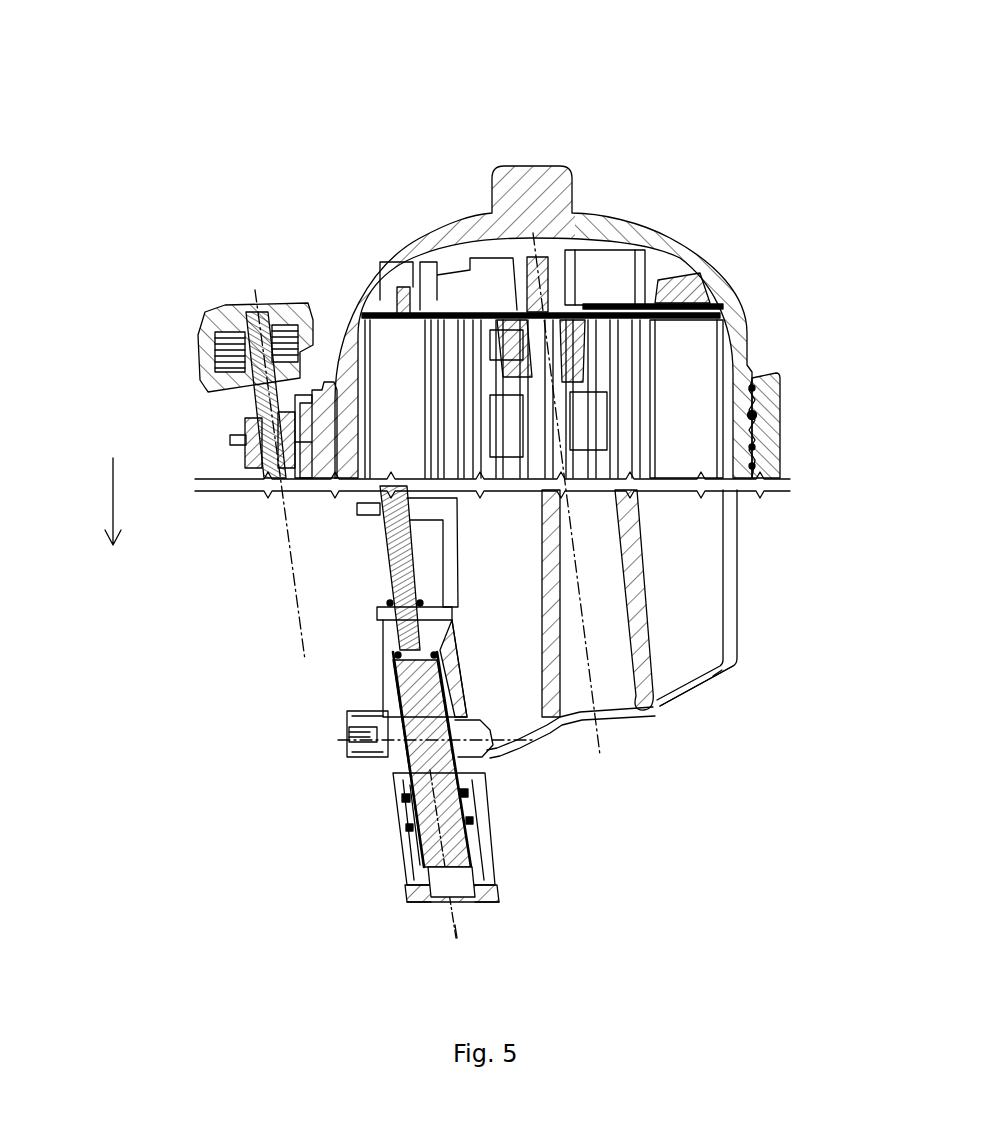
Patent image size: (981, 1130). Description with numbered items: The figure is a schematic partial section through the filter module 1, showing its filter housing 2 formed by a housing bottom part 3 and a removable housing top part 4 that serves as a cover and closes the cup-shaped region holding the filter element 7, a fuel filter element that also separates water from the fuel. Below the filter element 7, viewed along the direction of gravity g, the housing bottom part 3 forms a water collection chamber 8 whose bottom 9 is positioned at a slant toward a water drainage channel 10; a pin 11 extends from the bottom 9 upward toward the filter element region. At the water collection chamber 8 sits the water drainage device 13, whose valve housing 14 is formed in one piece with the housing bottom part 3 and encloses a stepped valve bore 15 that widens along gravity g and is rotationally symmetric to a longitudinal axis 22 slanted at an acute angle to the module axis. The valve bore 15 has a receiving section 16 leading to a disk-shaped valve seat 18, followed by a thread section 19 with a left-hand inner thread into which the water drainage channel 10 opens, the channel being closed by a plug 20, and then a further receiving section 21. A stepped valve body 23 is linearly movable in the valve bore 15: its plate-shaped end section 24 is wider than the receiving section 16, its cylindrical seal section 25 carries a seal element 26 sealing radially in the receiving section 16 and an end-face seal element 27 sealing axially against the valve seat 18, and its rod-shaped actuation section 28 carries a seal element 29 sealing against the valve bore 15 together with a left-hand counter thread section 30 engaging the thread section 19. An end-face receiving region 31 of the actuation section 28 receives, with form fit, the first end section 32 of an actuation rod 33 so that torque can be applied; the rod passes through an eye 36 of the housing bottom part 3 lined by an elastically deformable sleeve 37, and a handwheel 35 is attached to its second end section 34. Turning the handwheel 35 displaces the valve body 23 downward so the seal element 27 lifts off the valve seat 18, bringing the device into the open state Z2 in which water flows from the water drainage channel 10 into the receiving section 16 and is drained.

The filter module 1 is at (521, 70).
The filter housing 2 is at (827, 338).
The housing bottom part 3 is at (783, 427).
The housing top part 4 is at (748, 335).
The filter element 7 is at (697, 403).
The water collection chamber 8 is at (737, 625).
The bottom 9 is at (703, 690).
The water drainage channel 10 is at (493, 735).
The pin 11 is at (637, 543).
The water drainage device 13 is at (302, 848).
The valve housing 14 is at (397, 853).
The valve bore 15 is at (407, 778).
The receiving section 16 is at (400, 833).
The valve seat 18 is at (483, 773).
The thread section 19 is at (550, 725).
The plug 20 is at (345, 745).
The further receiving section 21 is at (383, 640).
The longitudinal axis 22 is at (450, 913).
The valve body 23 is at (492, 898).
The end section 24 is at (497, 882).
The seal section 25 is at (413, 873).
The seal element 26 is at (478, 830).
The seal element 27 is at (400, 807).
The actuation section 28 is at (395, 687).
The seal element 29 is at (465, 657).
The counter thread section 30 is at (477, 760).
The receiving region 31 is at (447, 612).
The first end section 32 is at (383, 613).
The actuation rod 33 is at (380, 547).
The second end section 34 is at (253, 412).
The handwheel 35 is at (283, 298).
The eye 36 is at (232, 442).
The sleeve 37 is at (252, 468).
The direction of gravity g is at (100, 501).
The open state Z2 is at (457, 945).